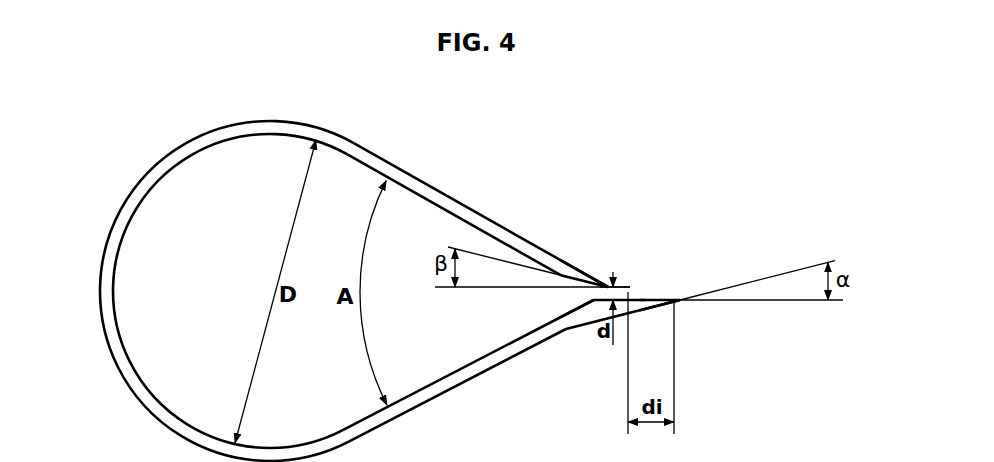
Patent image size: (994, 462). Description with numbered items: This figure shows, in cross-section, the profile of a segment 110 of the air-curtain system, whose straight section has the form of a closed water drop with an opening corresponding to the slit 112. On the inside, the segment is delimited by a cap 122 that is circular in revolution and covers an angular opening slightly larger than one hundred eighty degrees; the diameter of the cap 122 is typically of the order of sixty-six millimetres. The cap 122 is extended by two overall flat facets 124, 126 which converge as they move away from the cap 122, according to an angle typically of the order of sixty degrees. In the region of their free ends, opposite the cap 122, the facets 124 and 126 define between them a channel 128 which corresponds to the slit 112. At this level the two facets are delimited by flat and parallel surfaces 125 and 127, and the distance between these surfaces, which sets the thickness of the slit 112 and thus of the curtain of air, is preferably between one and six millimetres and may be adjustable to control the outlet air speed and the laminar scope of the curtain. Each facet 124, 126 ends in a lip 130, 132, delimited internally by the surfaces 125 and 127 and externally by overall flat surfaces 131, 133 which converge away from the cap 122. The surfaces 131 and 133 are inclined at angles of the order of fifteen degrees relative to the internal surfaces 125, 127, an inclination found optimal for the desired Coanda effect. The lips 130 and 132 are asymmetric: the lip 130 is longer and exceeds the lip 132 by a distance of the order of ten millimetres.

The nozzle 110 is at (376, 125).
The slit 112 is at (637, 296).
The cap 122 is at (118, 290).
The facet 124 is at (449, 389).
The flat and parallel surface 125 is at (658, 298).
The facet 126 is at (448, 203).
The flat and parallel surface 127 is at (600, 290).
The channel 128 is at (602, 322).
The lip 130 is at (588, 318).
The external flat surface 131 is at (657, 307).
The lip 132 is at (625, 285).
The external flat surface 133 is at (603, 279).